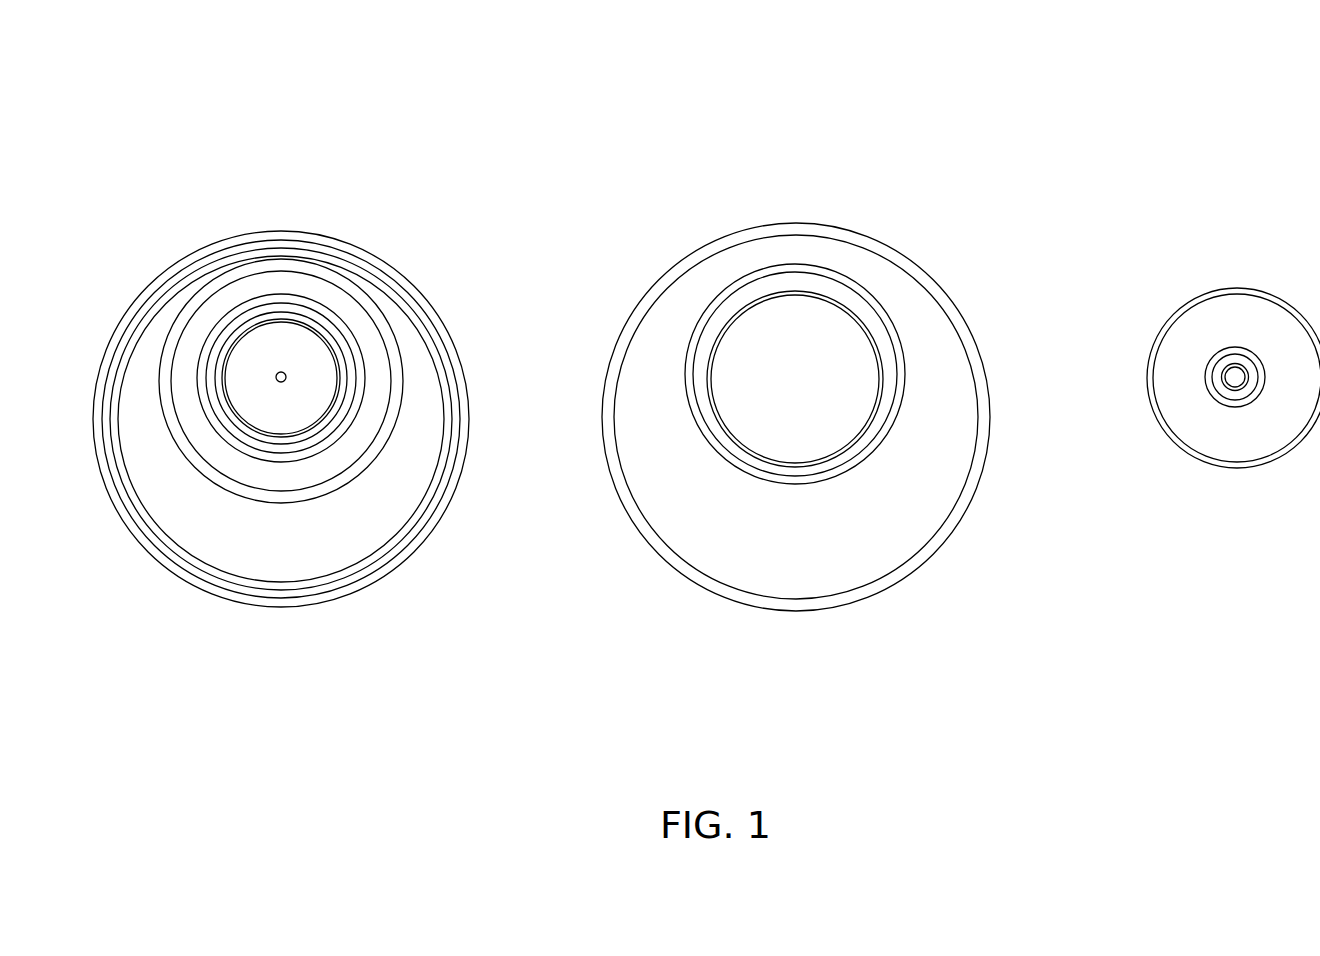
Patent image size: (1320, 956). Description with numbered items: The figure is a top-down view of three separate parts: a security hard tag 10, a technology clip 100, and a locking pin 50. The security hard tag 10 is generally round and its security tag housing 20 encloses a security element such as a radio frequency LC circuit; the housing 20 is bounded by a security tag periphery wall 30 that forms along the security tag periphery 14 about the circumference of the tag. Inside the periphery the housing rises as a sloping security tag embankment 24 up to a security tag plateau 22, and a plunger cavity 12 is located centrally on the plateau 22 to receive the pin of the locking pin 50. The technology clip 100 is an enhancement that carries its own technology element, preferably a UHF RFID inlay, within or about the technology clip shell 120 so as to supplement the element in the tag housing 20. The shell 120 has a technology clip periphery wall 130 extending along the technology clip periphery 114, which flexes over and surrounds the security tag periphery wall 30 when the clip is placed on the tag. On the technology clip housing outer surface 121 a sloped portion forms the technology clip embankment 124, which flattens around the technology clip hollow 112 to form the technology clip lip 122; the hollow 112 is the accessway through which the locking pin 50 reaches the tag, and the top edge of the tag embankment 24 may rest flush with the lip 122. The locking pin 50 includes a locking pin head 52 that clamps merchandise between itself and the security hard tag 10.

The security hard tag 10 is at (210, 132).
The plunger cavity 12 is at (284, 372).
The security tag periphery 14 is at (265, 232).
The security tag housing 20 is at (380, 513).
The security tag plateau 22 is at (310, 400).
The security tag embankment 24 is at (220, 307).
The security tag periphery wall 30 is at (168, 567).
The locking pin 50 is at (1237, 184).
The locking pin head 52 is at (1203, 338).
The technology clip 100 is at (747, 130).
The technology clip hollow 112 is at (775, 417).
The technology clip periphery 114 is at (637, 307).
The technology clip shell 120 is at (908, 535).
The technology clip housing outer surface 121 is at (887, 413).
The technology clip lip 122 is at (738, 297).
The technology clip embankment 124 is at (925, 375).
The technology clip periphery wall 130 is at (815, 225).